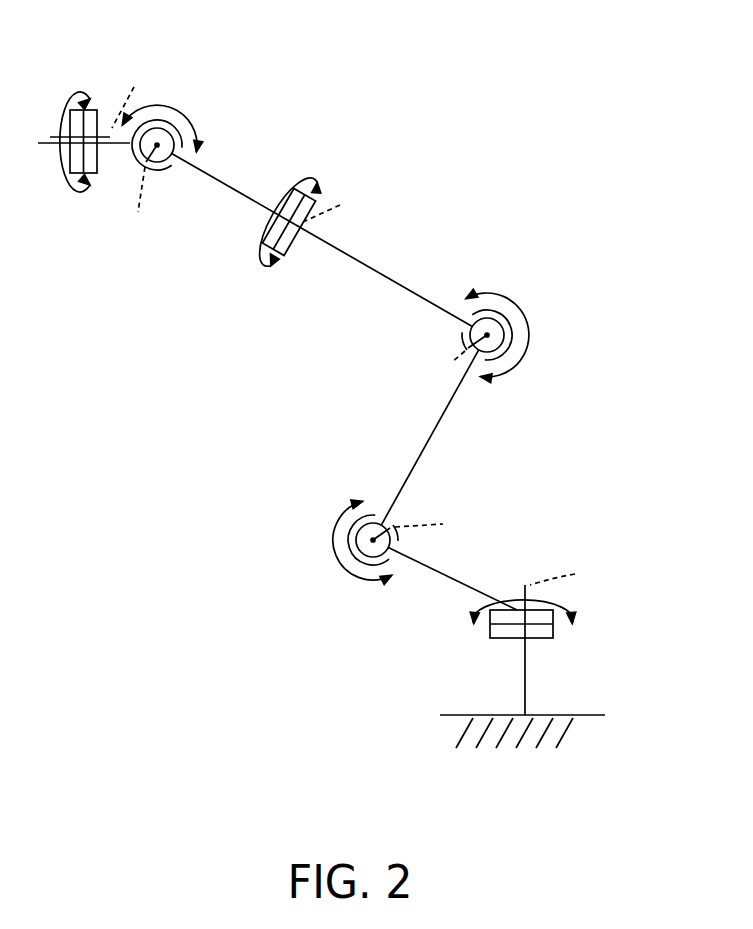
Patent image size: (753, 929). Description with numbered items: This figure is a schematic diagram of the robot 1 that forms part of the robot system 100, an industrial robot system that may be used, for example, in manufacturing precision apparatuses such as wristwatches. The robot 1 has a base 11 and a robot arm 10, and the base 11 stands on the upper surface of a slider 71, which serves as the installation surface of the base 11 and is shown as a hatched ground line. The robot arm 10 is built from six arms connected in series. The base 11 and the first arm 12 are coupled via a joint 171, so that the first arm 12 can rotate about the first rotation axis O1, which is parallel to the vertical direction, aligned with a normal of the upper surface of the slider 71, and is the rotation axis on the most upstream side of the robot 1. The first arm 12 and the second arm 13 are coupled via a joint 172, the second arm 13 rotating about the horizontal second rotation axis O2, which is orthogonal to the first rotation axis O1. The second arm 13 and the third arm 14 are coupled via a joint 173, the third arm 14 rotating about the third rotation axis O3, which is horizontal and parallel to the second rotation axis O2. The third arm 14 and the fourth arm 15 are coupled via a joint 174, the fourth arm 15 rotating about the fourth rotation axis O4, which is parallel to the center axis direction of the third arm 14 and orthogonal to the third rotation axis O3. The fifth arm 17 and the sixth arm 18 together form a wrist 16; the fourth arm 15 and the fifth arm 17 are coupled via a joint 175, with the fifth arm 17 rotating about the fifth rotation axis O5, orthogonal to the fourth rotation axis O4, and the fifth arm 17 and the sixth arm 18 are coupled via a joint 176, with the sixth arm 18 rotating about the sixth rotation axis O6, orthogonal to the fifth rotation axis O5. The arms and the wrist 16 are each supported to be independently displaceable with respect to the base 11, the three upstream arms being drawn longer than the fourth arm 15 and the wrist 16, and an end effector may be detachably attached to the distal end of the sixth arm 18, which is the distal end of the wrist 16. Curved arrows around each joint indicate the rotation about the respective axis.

The robot system 100 is at (351, 357).
The robot 1 is at (351, 364).
The robot arm 10 is at (351, 364).
The base 11 is at (585, 653).
The first arm 12 is at (500, 545).
The second arm 13 is at (397, 425).
The third arm 14 is at (460, 273).
The fourth arm 15 is at (210, 113).
The wrist 16 is at (72, 208).
The fifth arm 17 is at (117, 152).
The sixth arm 18 is at (53, 152).
The slider 71 is at (588, 710).
The joint 171 is at (583, 610).
The joint 172 is at (417, 508).
The joint 173 is at (450, 340).
The joint 174 is at (322, 168).
The joint 175 is at (170, 178).
The joint 176 is at (90, 80).
The first rotation axis O1 is at (566, 569).
The second rotation axis O2 is at (422, 526).
The third rotation axis O3 is at (453, 365).
The fourth rotation axis O4 is at (329, 199).
The fifth rotation axis O5 is at (140, 194).
The sixth rotation axis O6 is at (130, 96).